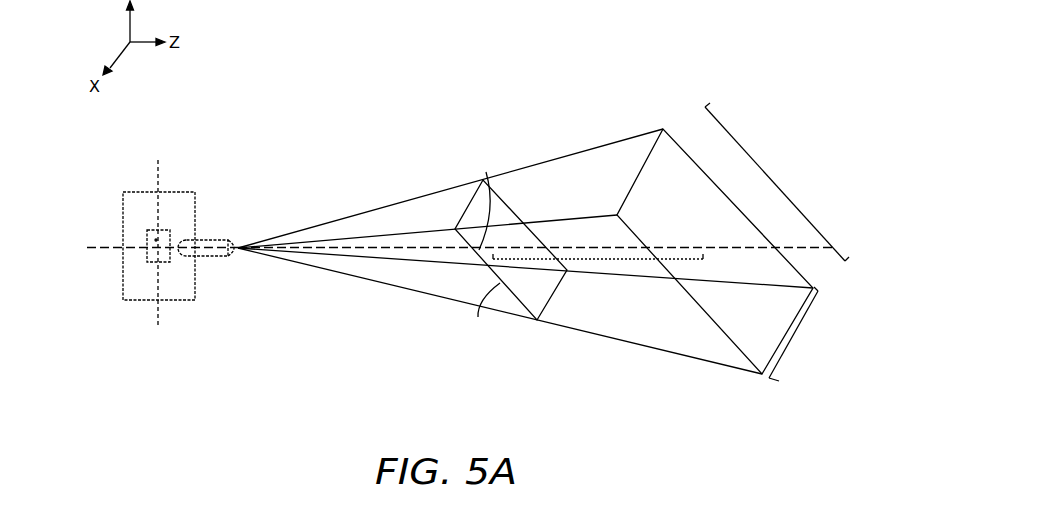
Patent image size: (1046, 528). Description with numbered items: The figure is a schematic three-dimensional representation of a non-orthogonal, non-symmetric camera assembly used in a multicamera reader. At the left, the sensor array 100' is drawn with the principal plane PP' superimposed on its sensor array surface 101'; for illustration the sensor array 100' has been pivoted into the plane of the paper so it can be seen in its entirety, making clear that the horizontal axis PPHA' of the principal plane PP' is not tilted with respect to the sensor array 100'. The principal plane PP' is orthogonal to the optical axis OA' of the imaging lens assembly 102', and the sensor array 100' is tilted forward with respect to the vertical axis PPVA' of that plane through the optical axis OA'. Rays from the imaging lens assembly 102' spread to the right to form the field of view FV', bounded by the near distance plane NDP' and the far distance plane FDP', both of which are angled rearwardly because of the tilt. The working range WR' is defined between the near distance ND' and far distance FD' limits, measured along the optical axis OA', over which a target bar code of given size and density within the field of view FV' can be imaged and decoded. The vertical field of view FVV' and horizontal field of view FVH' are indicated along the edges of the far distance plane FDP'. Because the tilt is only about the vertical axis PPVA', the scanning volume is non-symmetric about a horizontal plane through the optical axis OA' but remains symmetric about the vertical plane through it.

The sensor array 100' is at (141, 287).
The sensor array surface 101' is at (137, 198).
The imaging lens assembly 102' is at (209, 269).
The principal plane PP' is at (160, 224).
The horizontal axis of the principal plane PPHA' is at (142, 235).
The vertical axis of the principal plane PPVA' is at (172, 262).
The optical axis OA' is at (535, 227).
The near distance ND' is at (511, 232).
The near distance plane NDP' is at (478, 311).
The working range WR' is at (598, 279).
The field of view FV' is at (715, 251).
The vertical field of view FVV' is at (777, 182).
The horizontal field of view FVH' is at (805, 334).
The far distance FD' is at (701, 226).
The far distance plane FDP' is at (678, 323).